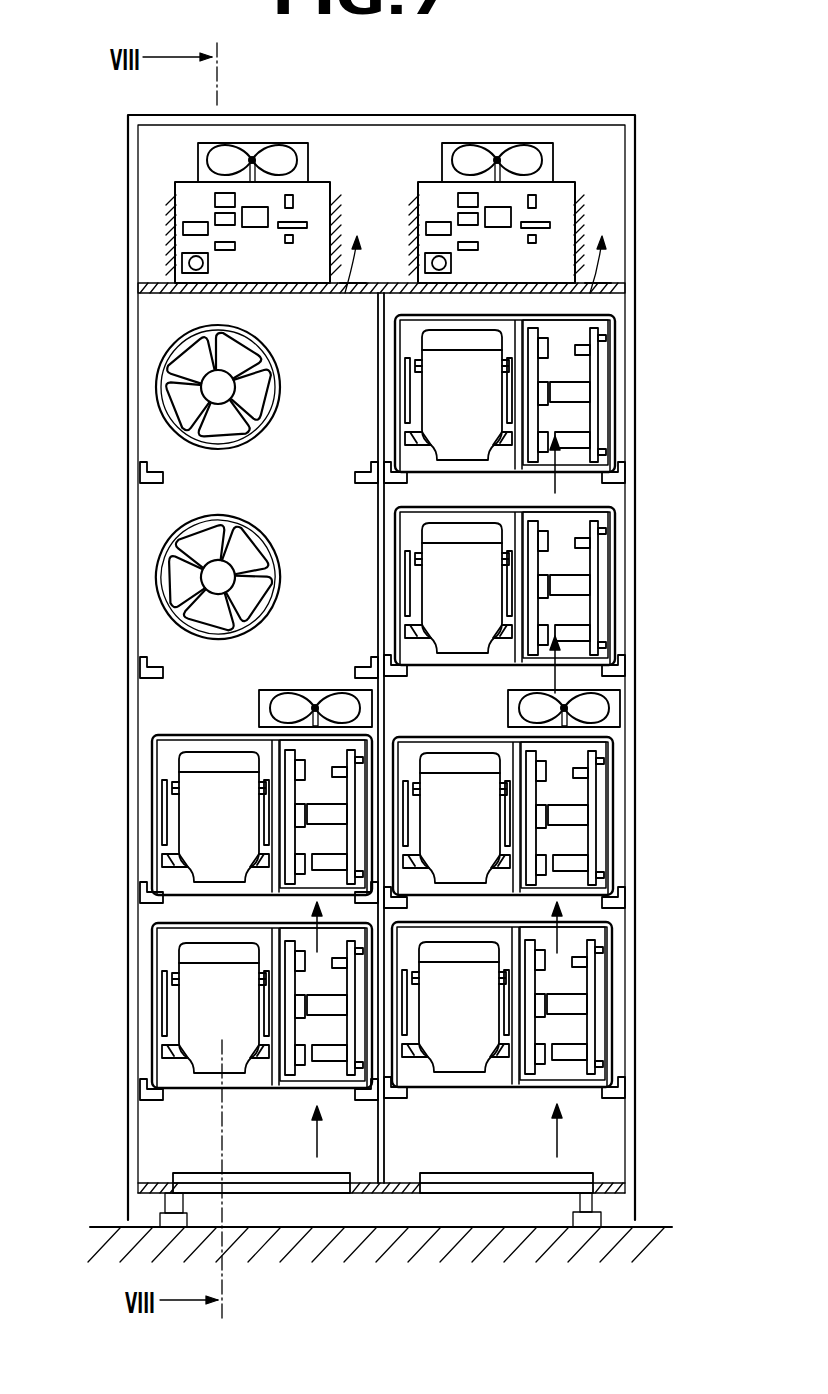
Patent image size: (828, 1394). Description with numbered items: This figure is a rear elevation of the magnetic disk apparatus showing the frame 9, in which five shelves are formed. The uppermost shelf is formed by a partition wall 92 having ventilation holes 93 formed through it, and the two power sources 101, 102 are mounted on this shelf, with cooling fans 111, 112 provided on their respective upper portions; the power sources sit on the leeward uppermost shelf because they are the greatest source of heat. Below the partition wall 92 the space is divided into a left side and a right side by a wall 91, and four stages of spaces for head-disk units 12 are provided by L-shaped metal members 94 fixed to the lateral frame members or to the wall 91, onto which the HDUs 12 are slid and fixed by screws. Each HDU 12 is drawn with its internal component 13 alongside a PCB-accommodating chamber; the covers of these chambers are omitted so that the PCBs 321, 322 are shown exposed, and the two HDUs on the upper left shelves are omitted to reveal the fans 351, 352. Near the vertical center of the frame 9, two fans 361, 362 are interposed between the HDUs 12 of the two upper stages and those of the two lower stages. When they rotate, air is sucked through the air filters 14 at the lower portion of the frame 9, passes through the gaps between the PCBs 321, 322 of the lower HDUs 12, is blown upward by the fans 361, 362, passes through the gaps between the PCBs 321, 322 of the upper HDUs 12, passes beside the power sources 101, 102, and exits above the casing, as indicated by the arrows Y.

The frame 9 is at (626, 176).
The head-disk unit 12 is at (617, 335).
The battery 13 is at (432, 398).
The air filter 14 is at (243, 1173).
The wall 91 is at (378, 600).
The partition wall 92 is at (290, 295).
The ventilation hole 93 is at (333, 295).
The L-shaped metal member 94 is at (150, 480).
The power source 101 is at (317, 182).
The power source 102 is at (565, 182).
The cooling fan 111 is at (222, 165).
The cooling fan 112 is at (462, 163).
The PCB 321 is at (548, 375).
The PCB 322 is at (590, 418).
The fan 351 is at (172, 400).
The fan 352 is at (172, 592).
The fan 361 is at (262, 712).
The fan 362 is at (622, 712).